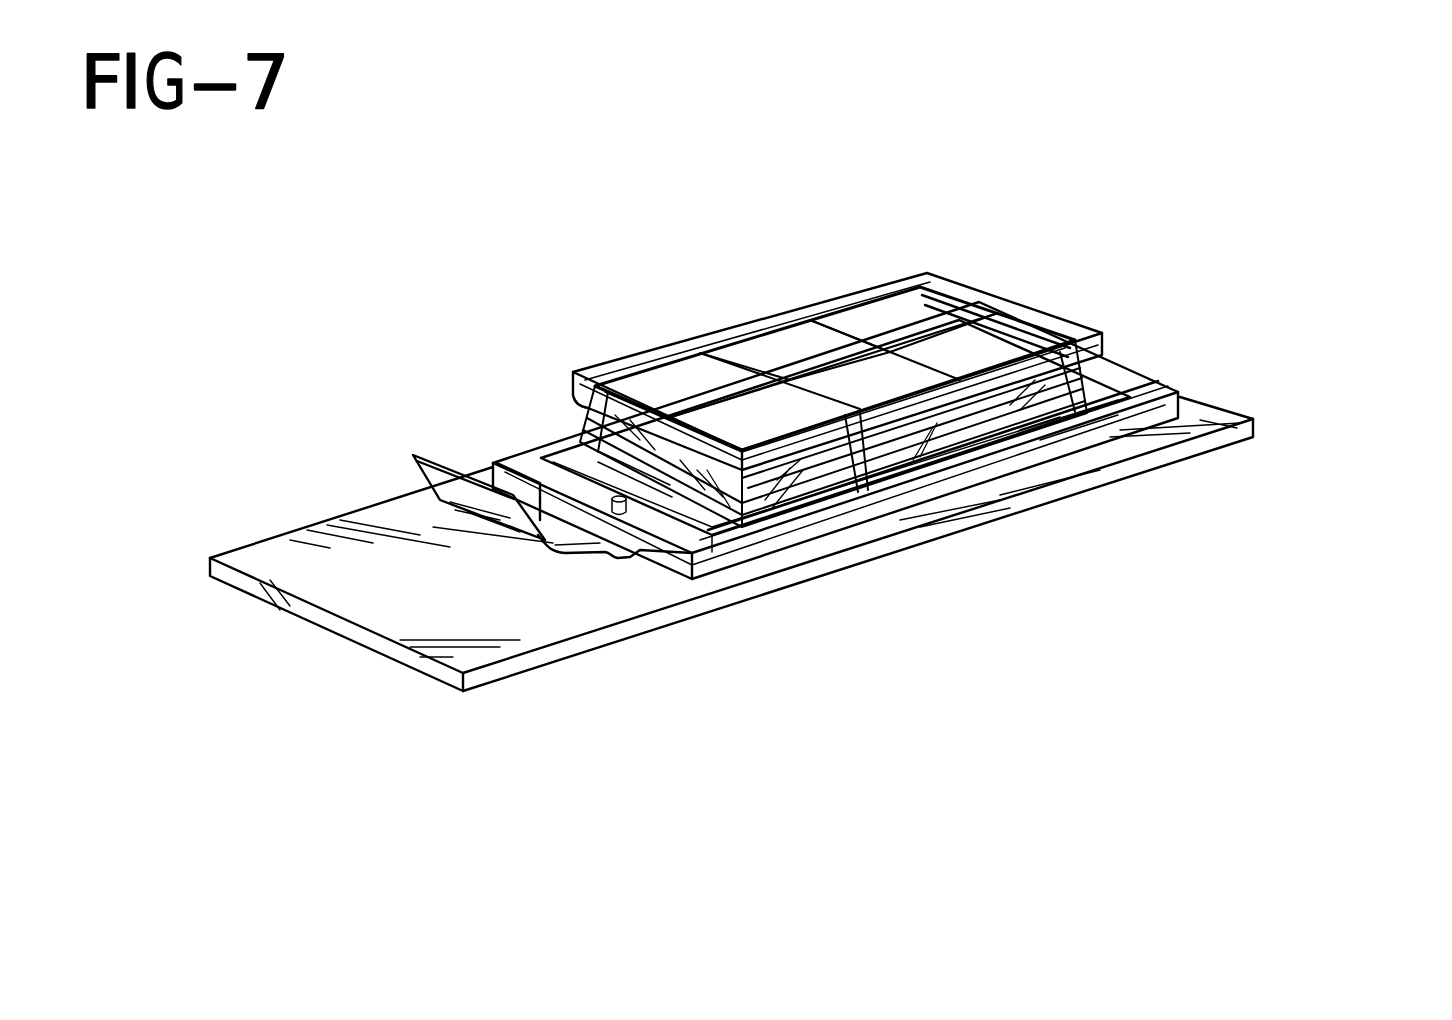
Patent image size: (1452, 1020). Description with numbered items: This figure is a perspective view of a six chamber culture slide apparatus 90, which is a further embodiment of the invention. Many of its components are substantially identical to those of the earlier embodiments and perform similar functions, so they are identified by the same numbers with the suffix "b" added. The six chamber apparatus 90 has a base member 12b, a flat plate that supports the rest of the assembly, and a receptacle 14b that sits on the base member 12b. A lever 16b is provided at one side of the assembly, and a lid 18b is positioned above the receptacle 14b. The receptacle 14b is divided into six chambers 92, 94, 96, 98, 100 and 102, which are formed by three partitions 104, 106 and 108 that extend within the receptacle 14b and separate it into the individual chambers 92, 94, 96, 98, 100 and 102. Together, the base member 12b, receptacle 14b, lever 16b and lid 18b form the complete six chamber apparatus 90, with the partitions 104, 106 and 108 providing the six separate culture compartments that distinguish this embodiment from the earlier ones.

The base member 12b is at (1243, 430).
The receptacle 14b is at (1160, 388).
The lever 16b is at (440, 488).
The lid 18b is at (977, 290).
The six chamber apparatus 90 is at (1225, 655).
The chamber 92 is at (730, 413).
The chamber 94 is at (653, 393).
The chamber 96 is at (850, 355).
The chamber 98 is at (782, 340).
The chamber 100 is at (1050, 312).
The chamber 102 is at (925, 365).
The partition 104 is at (852, 458).
The partition 106 is at (1045, 445).
The partition 108 is at (672, 480).